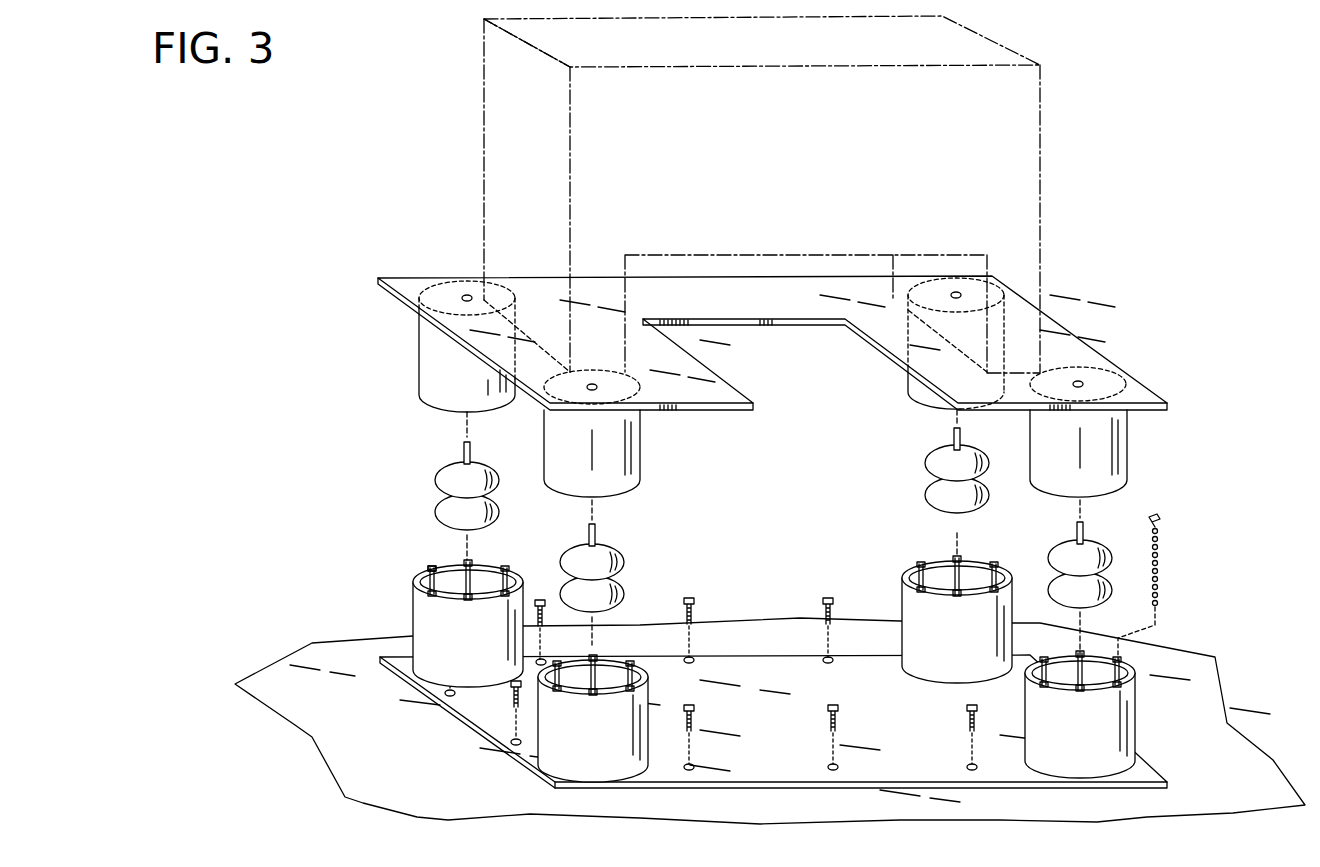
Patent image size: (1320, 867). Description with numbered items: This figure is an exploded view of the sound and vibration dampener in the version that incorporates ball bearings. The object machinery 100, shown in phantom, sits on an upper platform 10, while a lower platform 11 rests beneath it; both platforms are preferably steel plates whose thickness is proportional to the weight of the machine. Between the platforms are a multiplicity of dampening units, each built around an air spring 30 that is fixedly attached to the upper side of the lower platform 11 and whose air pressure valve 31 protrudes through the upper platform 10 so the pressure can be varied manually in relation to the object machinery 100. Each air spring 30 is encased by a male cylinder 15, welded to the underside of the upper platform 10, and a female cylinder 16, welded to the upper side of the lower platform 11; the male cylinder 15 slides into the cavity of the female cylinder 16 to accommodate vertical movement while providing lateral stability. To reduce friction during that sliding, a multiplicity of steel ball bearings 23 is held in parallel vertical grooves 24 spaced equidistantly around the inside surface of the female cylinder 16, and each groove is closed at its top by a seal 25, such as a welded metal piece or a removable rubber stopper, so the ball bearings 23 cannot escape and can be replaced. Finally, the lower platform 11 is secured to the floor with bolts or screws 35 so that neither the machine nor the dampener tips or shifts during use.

The object machinery 100 is at (1028, 172).
The upper platform 10 is at (1140, 395).
The lower platform 11 is at (788, 710).
The male cylinder 15 is at (425, 352).
The female cylinder 16 is at (420, 620).
The ball bearings 23 is at (1160, 590).
The vertical grooves 24 is at (1110, 645).
The seal 25 is at (1160, 520).
The air spring 30 is at (930, 485).
The air pressure valve 31 is at (1085, 527).
The bolts or screws 35 is at (825, 610).